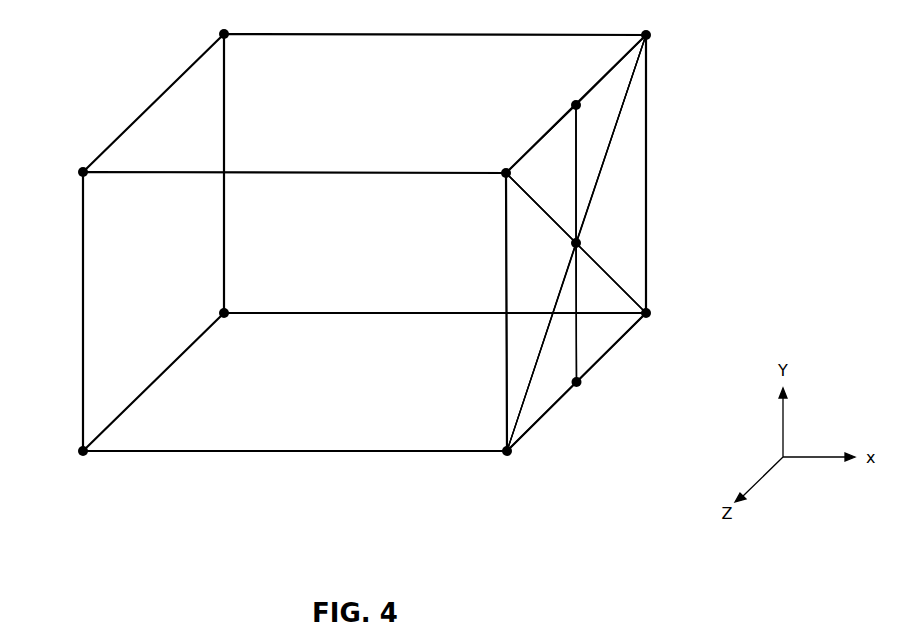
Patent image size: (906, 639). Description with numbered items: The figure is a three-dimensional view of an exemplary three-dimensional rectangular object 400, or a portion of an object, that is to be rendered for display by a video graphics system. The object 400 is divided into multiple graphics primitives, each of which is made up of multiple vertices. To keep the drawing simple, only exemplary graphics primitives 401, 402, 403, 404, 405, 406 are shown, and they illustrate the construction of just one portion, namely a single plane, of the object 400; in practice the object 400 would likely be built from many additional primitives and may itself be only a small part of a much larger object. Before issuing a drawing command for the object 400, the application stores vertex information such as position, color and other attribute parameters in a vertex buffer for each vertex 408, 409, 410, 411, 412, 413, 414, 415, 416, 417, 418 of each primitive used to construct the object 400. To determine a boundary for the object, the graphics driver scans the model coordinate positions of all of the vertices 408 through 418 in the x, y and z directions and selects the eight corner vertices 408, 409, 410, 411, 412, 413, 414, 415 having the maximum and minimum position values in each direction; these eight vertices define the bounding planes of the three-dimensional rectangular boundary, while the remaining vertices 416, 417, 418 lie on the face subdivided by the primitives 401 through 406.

The three-dimensional rectangular object 400 is at (350, 478).
The graphics primitive 401 is at (557, 184).
The graphics primitive 402 is at (615, 124).
The graphics primitive 403 is at (639, 212).
The graphics primitive 404 is at (619, 340).
The graphics primitive 405 is at (569, 384).
The graphics primitive 406 is at (557, 272).
The vertex 408 is at (504, 168).
The vertex 409 is at (650, 31).
The vertex 410 is at (650, 317).
The vertex 411 is at (505, 457).
The vertex 412 is at (82, 457).
The vertex 413 is at (80, 167).
The vertex 414 is at (228, 30).
The vertex 415 is at (228, 308).
The vertex 416 is at (572, 102).
The vertex 417 is at (581, 241).
The vertex 418 is at (580, 386).